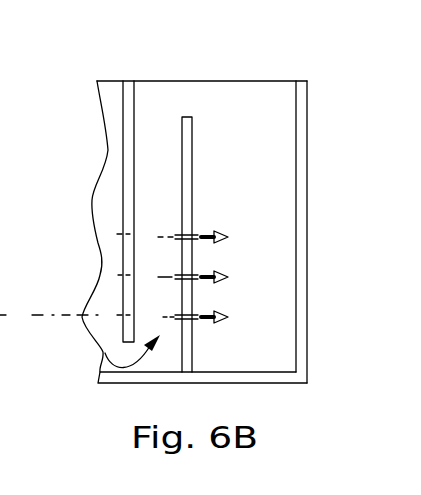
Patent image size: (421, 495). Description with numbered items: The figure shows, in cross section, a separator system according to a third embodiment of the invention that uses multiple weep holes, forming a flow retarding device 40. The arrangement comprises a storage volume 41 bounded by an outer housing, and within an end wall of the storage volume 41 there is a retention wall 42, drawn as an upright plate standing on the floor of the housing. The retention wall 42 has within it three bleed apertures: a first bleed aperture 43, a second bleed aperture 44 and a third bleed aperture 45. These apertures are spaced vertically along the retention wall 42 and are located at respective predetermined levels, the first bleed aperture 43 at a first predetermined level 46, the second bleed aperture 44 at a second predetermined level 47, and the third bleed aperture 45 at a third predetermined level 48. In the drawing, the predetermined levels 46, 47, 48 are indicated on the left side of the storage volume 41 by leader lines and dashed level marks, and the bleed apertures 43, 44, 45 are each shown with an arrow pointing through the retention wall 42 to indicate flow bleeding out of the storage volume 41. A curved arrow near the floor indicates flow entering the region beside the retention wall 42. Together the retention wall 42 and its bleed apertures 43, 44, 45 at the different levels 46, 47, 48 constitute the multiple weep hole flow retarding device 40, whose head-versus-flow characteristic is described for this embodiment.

The flow retarding device 40 is at (232, 56).
The storage volume 41 is at (155, 135).
The retention wall 42 is at (192, 143).
The first bleed aperture 43 is at (190, 313).
The second bleed aperture 44 is at (192, 276).
The third bleed aperture 45 is at (190, 233).
The first predetermined level 46 is at (113, 315).
The second predetermined level 47 is at (118, 275).
The third predetermined level 48 is at (117, 234).